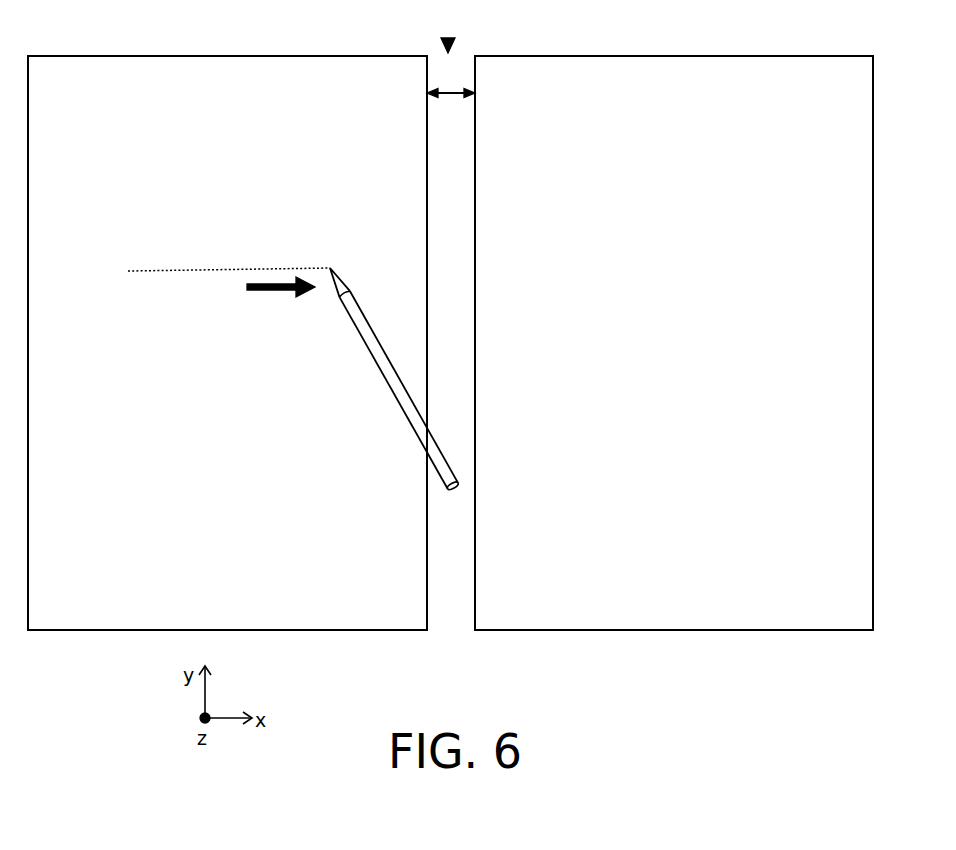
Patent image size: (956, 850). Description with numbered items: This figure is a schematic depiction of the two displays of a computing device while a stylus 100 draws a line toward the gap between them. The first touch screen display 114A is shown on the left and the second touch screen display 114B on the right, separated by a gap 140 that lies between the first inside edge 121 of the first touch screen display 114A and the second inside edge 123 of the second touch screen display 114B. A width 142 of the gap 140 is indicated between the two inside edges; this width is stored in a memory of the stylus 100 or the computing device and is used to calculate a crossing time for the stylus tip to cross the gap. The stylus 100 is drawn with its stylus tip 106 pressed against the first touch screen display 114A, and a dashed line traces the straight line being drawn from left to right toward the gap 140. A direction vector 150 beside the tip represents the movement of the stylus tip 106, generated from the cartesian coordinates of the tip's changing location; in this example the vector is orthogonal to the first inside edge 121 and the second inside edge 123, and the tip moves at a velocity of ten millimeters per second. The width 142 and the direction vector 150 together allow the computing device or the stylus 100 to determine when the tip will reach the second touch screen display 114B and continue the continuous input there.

The stylus 100 is at (380, 373).
The stylus tip 106 is at (330, 268).
The first touch screen display 114A is at (253, 584).
The second touch screen display 114B is at (738, 584).
The first inside edge 121 is at (427, 613).
The second inside edge 123 is at (475, 613).
The gap 140 is at (448, 40).
The width of the gap 142 is at (453, 91).
The direction vector 150 is at (283, 295).